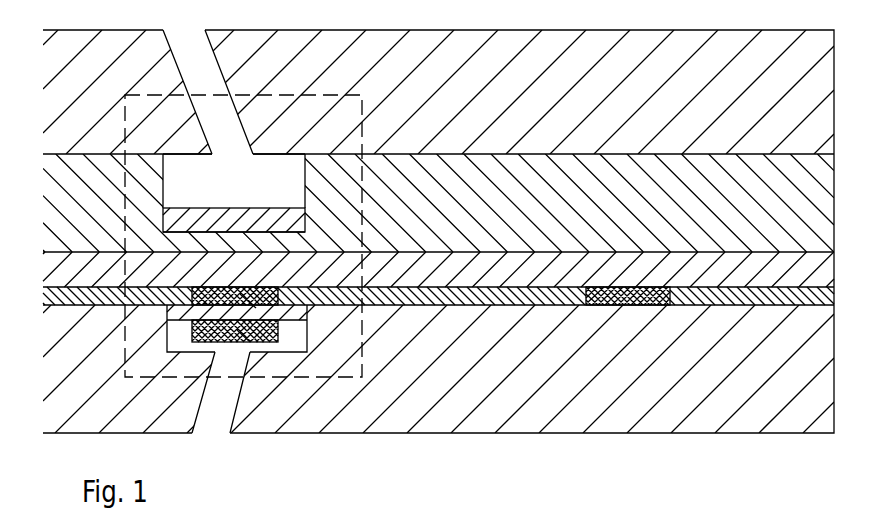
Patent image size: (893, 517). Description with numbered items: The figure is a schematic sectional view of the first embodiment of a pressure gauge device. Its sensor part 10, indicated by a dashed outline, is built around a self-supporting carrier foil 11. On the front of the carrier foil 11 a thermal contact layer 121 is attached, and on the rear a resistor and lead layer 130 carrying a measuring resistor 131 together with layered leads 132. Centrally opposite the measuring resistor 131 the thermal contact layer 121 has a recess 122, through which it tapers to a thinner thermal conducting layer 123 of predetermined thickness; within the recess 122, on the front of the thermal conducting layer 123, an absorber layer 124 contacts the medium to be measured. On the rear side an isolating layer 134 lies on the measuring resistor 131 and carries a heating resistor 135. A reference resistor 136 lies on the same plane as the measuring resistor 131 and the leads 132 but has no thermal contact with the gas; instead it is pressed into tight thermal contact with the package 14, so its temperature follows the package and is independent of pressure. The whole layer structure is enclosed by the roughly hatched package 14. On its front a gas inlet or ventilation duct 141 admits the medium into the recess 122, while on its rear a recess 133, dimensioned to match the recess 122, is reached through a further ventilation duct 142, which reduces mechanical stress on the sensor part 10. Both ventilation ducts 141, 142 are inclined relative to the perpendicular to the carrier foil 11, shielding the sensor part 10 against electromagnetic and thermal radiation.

The sensor part 10 is at (108, 105).
The carrier foil 11 is at (445, 280).
The package 14 is at (522, 105).
The thermal contact layer 121 is at (108, 215).
The recess 122 is at (247, 180).
The thermal conducting layer 123 is at (235, 237).
The absorber layer 124 is at (238, 213).
The resistor and lead layer 130 is at (438, 297).
The measuring resistor 131 is at (306, 323).
The leads 132 is at (323, 328).
The recess 133 is at (262, 342).
The isolating layer 134 is at (240, 294).
The heating resistor 135 is at (237, 330).
The reference resistor 136 is at (633, 297).
The gas inlet or ventilation duct 141 is at (216, 76).
The ventilation duct 142 is at (233, 428).